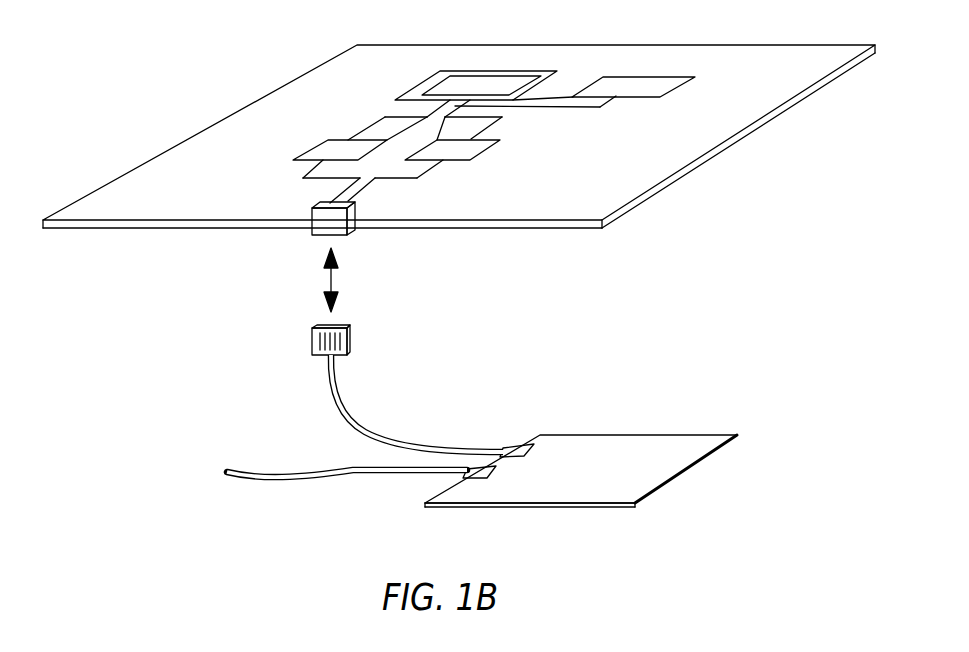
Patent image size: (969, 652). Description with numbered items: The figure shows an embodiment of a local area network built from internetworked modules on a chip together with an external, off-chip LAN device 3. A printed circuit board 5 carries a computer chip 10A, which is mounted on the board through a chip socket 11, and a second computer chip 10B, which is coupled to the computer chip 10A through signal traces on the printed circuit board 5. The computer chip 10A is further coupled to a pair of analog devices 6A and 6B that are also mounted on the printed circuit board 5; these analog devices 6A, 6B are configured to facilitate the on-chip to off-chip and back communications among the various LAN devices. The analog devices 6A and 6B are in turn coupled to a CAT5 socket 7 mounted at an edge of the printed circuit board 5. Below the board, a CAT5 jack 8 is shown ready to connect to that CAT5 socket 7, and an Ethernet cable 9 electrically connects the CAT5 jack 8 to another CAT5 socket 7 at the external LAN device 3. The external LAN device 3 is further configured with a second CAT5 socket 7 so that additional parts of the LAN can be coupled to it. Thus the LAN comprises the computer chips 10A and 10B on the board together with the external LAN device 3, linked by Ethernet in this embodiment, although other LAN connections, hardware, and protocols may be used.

The external LAN device 3 is at (670, 465).
The printed circuit board 5 is at (571, 206).
The analog device 6A is at (312, 150).
The analog device 6B is at (480, 153).
The CAT5 socket 7 is at (311, 212).
The CAT5 jack 8 is at (350, 340).
The Ethernet cable 9 is at (377, 430).
The computer chip 10A is at (463, 78).
The computer chip 10B is at (633, 97).
The chip socket 11 is at (395, 100).